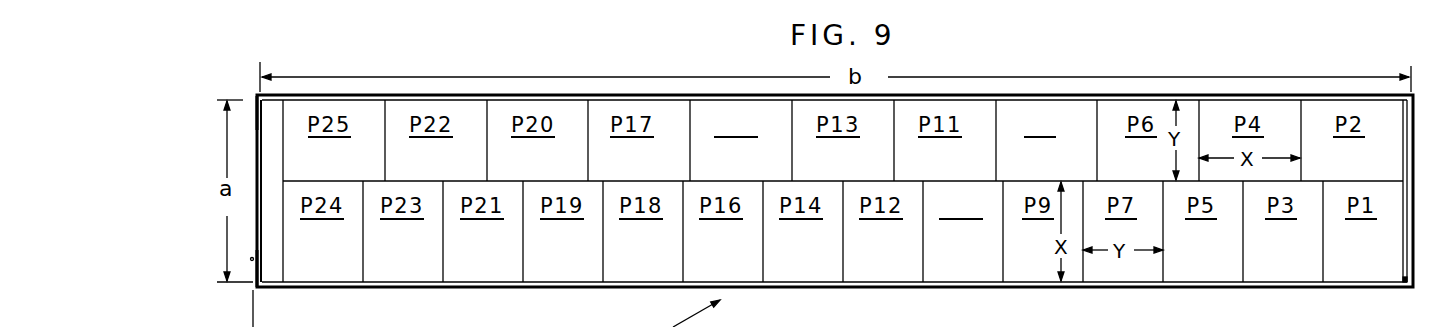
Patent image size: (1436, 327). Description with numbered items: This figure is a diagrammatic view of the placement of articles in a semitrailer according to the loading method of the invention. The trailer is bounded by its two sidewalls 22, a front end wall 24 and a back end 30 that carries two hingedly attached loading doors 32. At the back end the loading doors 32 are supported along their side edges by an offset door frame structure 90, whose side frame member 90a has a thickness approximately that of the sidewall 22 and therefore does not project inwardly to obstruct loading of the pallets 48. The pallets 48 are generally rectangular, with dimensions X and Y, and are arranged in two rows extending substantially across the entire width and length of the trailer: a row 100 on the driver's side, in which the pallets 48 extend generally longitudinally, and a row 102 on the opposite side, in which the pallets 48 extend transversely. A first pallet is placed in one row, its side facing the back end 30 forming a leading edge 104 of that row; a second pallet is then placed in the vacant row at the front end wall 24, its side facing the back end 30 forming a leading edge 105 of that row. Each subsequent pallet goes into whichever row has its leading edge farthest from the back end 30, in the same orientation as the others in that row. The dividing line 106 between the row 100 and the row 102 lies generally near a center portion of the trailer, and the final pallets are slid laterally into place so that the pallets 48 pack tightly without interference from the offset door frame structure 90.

The sidewall 22 is at (650, 94).
The front end wall 24 is at (1414, 201).
The back end 30 is at (272, 163).
The loading doors 32 is at (254, 183).
The pallets 48 is at (667, 115).
The offset door frame structure 90 is at (253, 278).
The side frame member 90a is at (254, 97).
The row 100 is at (1067, 127).
The row 102 is at (958, 258).
The leading edge 104 is at (1301, 148).
The leading edge 105 is at (1323, 242).
The dividing line 106 is at (730, 136).